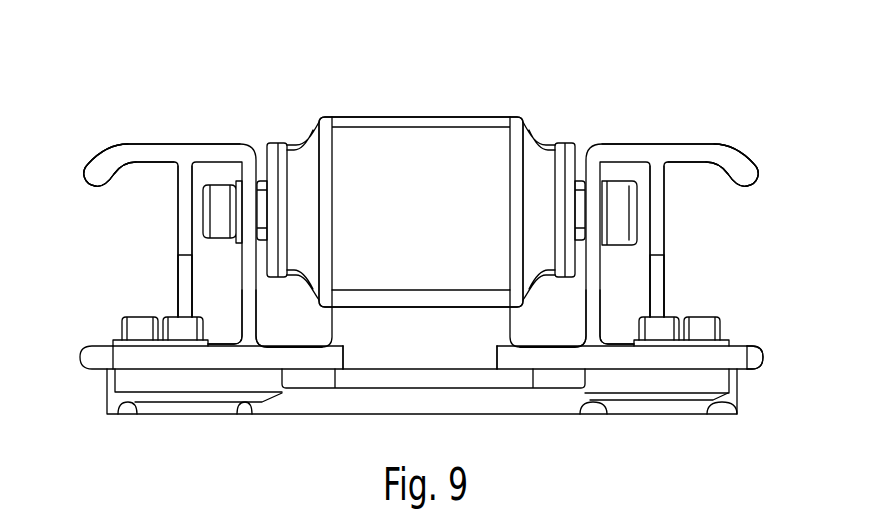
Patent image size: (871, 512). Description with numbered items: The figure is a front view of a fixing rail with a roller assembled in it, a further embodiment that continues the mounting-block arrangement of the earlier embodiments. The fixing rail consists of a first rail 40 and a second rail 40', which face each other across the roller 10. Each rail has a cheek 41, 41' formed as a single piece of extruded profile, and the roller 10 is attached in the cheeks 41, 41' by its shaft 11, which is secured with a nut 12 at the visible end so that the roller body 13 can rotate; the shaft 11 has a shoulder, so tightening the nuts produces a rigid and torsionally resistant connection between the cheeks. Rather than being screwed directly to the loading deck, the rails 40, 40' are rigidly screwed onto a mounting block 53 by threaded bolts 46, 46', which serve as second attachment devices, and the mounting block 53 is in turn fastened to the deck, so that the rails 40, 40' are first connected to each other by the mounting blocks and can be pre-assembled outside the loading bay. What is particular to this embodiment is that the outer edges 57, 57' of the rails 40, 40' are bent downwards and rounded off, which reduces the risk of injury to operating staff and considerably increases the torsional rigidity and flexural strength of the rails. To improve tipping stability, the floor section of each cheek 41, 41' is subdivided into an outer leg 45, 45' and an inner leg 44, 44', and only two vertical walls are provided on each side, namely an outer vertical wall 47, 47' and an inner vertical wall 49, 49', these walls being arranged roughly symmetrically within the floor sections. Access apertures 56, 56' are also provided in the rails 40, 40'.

The roller 10 is at (397, 111).
The shaft 11 is at (582, 206).
The nut 12 is at (222, 230).
The roller body 13 is at (465, 150).
The first rail 40 is at (203, 191).
The second rail 40' is at (639, 194).
The cheek 41 is at (160, 119).
The cheek 41' is at (680, 115).
The inner leg 44 is at (356, 340).
The inner leg 44' is at (487, 340).
The outer leg 45 is at (394, 342).
The outer leg 45' is at (785, 342).
The second attachment device 46 is at (150, 309).
The second attachment device 46' is at (702, 311).
The outer vertical wall 47 is at (158, 281).
The outer vertical wall 47' is at (688, 286).
The inner vertical wall 49 is at (265, 318).
The inner vertical wall 49' is at (577, 318).
The mounting block 53 is at (740, 388).
The access aperture 56 is at (137, 241).
The access aperture 56' is at (710, 241).
The outer edge 57 is at (80, 167).
The outer edge 57' is at (766, 168).